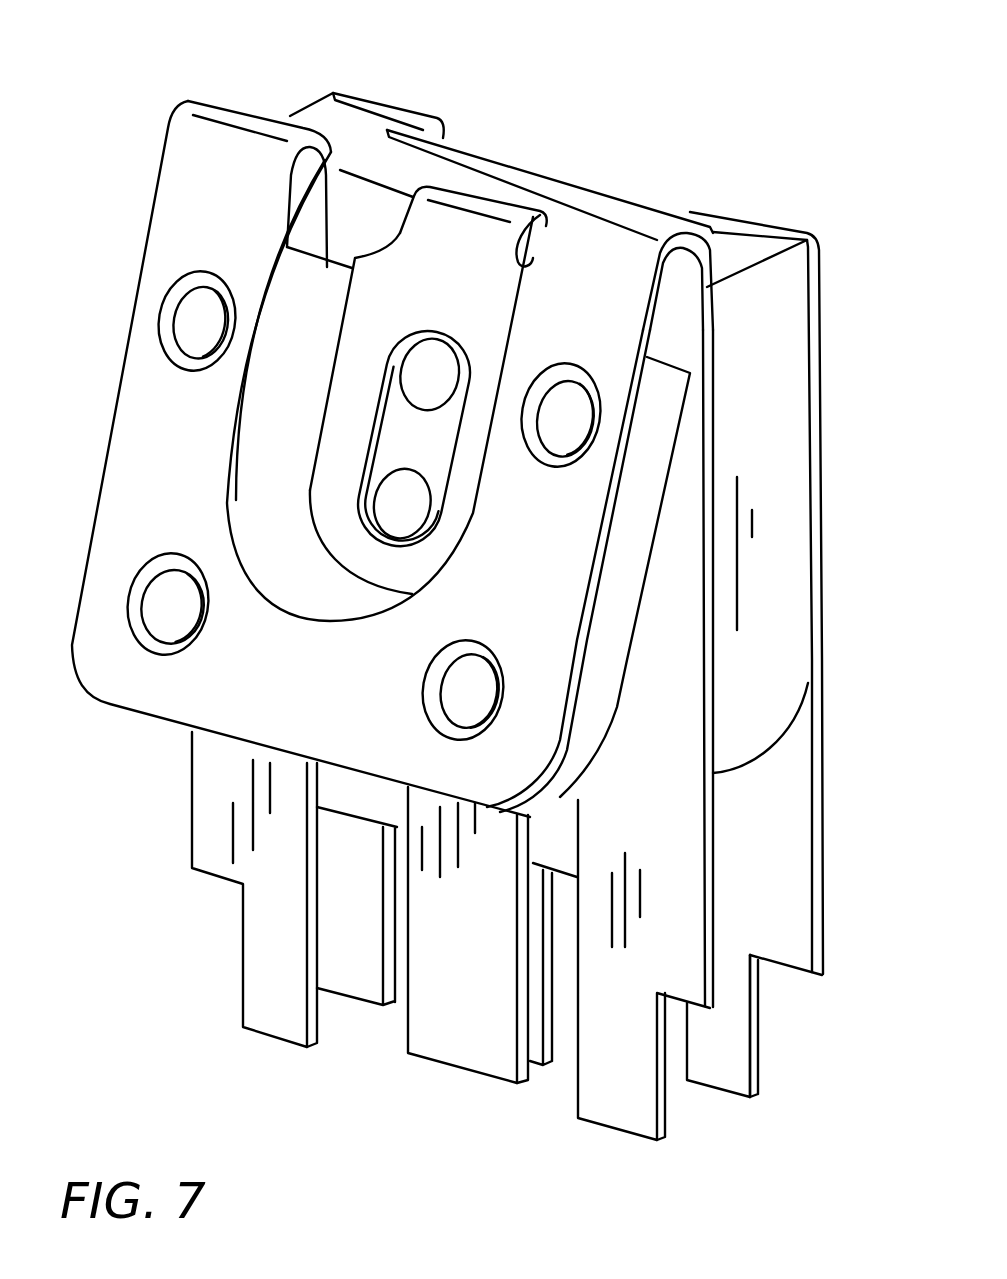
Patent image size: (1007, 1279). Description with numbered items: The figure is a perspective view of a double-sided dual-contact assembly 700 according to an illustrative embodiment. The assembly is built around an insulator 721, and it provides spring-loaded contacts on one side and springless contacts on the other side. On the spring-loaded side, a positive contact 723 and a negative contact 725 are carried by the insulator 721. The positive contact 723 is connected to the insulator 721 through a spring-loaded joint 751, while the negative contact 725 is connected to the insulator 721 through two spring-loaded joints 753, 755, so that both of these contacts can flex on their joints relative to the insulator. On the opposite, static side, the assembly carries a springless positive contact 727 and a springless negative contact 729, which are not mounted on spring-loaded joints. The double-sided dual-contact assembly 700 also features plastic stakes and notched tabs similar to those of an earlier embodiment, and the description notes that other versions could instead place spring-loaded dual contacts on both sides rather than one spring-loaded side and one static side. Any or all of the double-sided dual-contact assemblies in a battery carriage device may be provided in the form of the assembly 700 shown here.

The double-sided dual-contact assembly 700 is at (784, 114).
The insulator 721 is at (303, 100).
The positive contact 723 is at (317, 430).
The negative contact 725 is at (150, 210).
The positive contact 727 is at (562, 176).
The negative contact 729 is at (790, 218).
The spring-loaded joint 751 is at (480, 193).
The spring-loaded joint 753 is at (190, 97).
The spring-loaded joint 755 is at (630, 207).